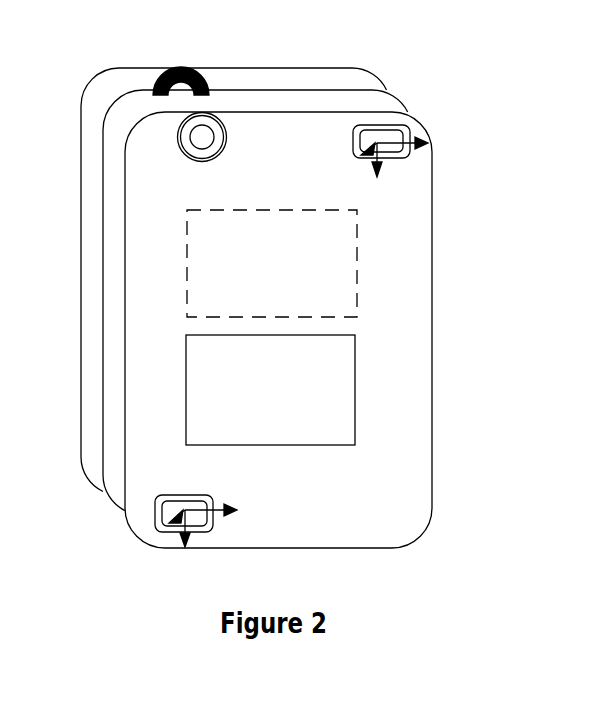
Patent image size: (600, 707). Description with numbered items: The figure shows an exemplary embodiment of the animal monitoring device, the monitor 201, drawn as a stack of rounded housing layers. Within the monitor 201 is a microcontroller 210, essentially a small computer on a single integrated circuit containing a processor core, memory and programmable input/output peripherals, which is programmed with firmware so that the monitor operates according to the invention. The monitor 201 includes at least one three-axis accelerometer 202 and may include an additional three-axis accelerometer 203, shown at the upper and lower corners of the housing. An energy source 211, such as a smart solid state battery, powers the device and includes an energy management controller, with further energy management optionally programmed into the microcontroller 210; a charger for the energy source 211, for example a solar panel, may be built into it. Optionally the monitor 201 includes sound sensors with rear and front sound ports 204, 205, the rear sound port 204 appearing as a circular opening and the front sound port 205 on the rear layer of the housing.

The animal monitor 201 is at (397, 405).
The three-axis accelerometer 202 is at (413, 153).
The additional three-axis accelerometer 203 is at (168, 524).
The rear sound port 204 is at (213, 133).
The front sound port 205 is at (137, 68).
The microcontroller 210 is at (327, 298).
The energy source 211 is at (222, 392).